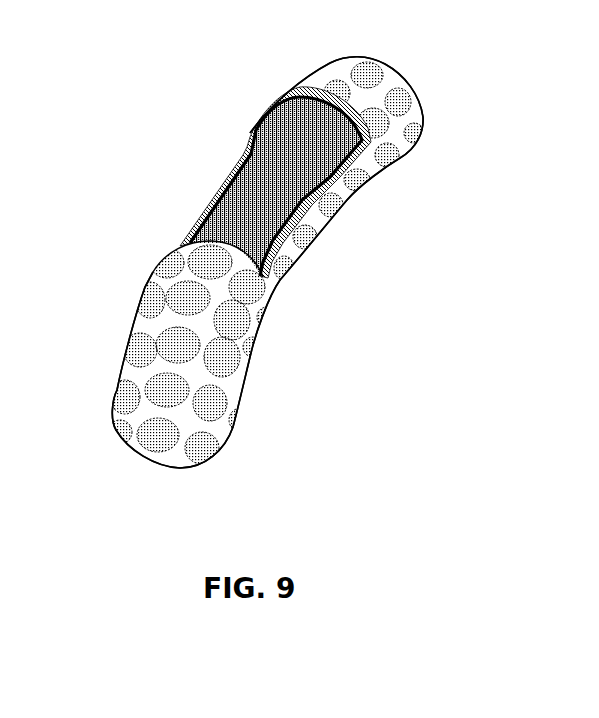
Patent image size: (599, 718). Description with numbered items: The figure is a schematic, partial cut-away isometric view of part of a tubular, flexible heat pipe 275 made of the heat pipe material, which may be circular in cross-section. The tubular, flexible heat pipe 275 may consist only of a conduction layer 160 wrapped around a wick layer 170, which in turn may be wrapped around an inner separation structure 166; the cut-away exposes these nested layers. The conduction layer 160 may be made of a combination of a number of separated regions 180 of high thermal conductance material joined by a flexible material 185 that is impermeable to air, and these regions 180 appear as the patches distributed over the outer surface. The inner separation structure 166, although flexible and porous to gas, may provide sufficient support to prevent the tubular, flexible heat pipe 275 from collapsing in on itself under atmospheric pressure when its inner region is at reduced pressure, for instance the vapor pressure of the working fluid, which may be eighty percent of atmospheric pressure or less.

The conduction layer 160 is at (121, 326).
The inner separation structure 166 is at (217, 225).
The wick layer 170 is at (241, 154).
The separated regions of high thermal conductance material 180 is at (380, 63).
The flexible material 185 is at (417, 115).
The tubular, flexible heat pipe 275 is at (317, 531).